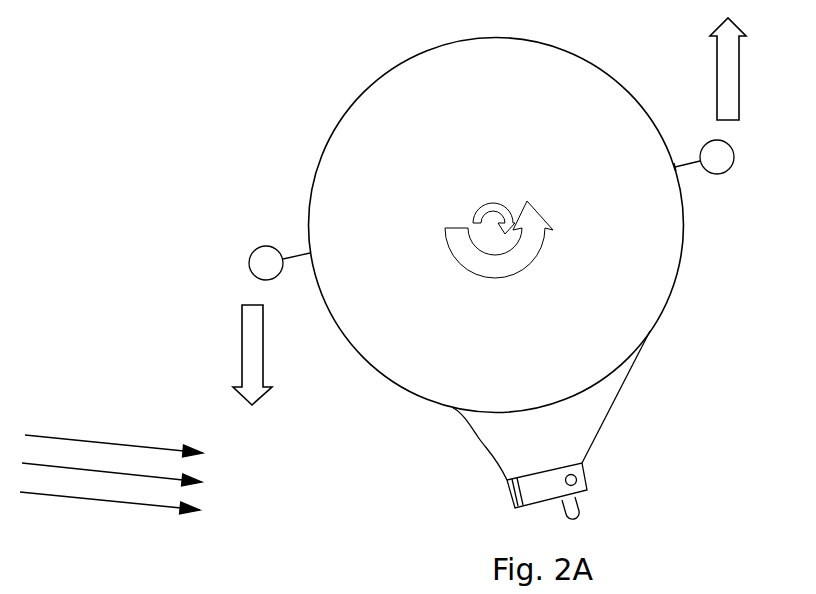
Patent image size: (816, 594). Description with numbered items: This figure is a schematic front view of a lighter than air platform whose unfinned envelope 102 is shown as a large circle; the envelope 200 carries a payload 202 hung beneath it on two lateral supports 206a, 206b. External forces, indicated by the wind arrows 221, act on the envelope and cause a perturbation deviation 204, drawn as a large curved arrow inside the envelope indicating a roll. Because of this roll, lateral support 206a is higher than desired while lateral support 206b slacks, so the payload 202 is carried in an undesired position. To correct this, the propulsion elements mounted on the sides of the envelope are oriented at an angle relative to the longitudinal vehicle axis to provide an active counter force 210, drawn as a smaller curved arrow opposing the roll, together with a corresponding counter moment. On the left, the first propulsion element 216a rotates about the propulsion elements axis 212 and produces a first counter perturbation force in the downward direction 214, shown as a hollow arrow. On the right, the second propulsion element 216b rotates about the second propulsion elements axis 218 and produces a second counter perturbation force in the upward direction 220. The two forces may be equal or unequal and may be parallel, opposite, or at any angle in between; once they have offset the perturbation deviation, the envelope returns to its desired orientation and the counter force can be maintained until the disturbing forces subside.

The unfinned envelope 102 is at (397, 65).
The envelope 200 is at (422, 357).
The payload 202 is at (543, 475).
The perturbation deviation 204 is at (540, 253).
The lateral support 206a is at (607, 410).
The lateral support 206b is at (482, 447).
The active counter force 210 is at (477, 210).
The propulsion elements axis 212 is at (302, 252).
The first counter perturbation force 214 is at (242, 355).
The first propulsion element 216a is at (263, 245).
The second propulsion element 216b is at (718, 174).
The second propulsion elements axis 218 is at (688, 160).
The second counter perturbation force 220 is at (740, 67).
The wind direction 221 is at (105, 500).